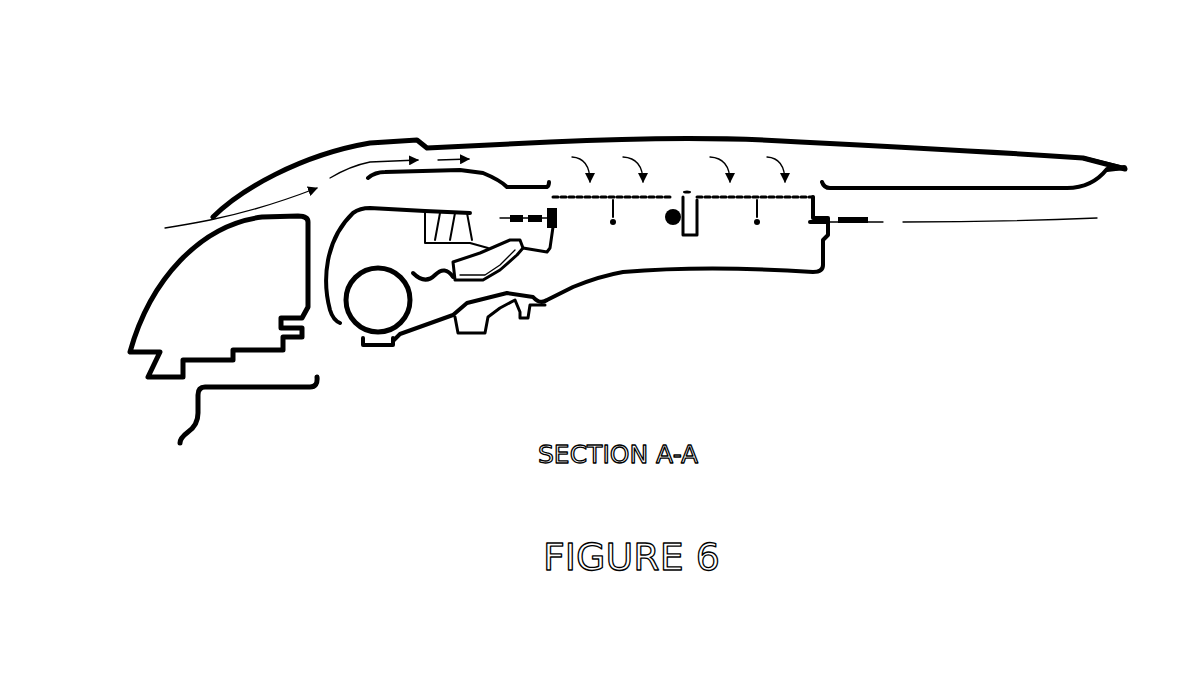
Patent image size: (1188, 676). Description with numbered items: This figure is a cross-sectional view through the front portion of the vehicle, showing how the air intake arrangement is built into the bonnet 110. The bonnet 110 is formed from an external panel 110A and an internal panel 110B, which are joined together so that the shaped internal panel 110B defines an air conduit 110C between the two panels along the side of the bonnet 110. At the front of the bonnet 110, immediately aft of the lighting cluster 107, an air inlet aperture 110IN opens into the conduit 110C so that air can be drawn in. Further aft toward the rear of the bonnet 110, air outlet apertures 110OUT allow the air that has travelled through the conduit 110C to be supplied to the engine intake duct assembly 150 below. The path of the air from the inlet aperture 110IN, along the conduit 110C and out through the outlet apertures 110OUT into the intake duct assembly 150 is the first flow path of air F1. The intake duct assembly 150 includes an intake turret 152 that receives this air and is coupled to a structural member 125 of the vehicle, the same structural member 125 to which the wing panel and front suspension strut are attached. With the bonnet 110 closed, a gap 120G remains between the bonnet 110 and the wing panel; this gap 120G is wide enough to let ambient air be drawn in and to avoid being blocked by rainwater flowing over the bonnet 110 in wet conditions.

The lighting cluster 107 is at (170, 302).
The bonnet 110 is at (876, 106).
The external panel 110A is at (963, 148).
The internal panel 110B is at (1085, 165).
The air conduit 110C is at (497, 155).
The air inlet aperture 110IN is at (326, 171).
The air outlet aperture 110OUT is at (567, 181).
The gap 120G is at (196, 215).
The structural member 125 is at (867, 222).
The engine intake duct assembly 150 is at (790, 272).
The intake turret 152 is at (637, 197).
The first flow path of air F1 is at (380, 162).